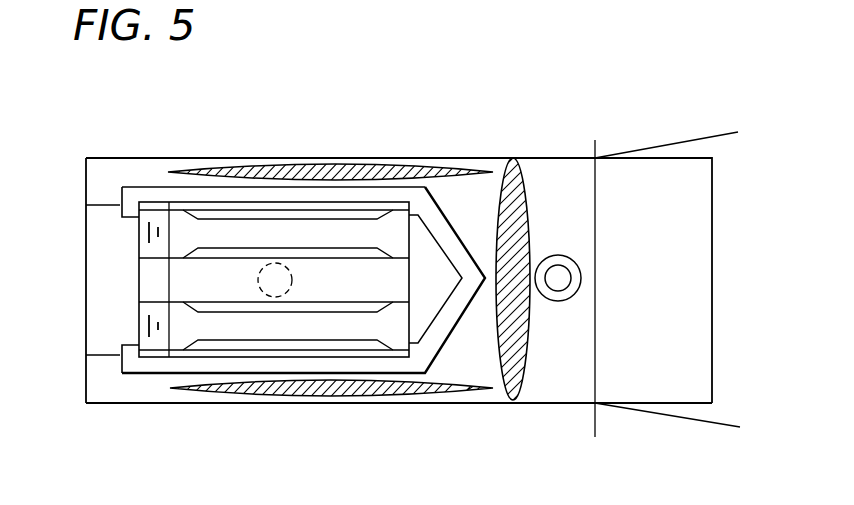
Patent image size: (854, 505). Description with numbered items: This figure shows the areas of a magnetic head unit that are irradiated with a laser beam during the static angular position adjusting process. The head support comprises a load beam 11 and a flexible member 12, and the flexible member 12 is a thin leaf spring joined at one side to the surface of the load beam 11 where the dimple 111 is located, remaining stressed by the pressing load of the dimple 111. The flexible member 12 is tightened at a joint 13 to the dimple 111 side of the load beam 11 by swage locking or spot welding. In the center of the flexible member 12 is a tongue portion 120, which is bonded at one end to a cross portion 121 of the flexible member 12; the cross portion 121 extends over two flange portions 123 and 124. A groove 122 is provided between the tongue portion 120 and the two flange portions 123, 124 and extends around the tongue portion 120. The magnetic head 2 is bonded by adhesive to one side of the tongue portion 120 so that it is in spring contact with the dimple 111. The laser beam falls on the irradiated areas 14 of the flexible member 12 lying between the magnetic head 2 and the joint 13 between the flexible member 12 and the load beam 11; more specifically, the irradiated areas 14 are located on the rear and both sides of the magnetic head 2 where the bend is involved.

The magnetic head 2 is at (392, 222).
The load beam 11 is at (680, 142).
The flexible member 12 is at (88, 406).
The joint 13 is at (560, 275).
The irradiated areas 14 is at (225, 165).
The dimple 111 is at (275, 272).
The tongue portion 120 is at (422, 308).
The cross portion 121 is at (108, 296).
The groove 122 is at (185, 375).
The flange portion 123 is at (278, 403).
The flange portion 124 is at (146, 178).